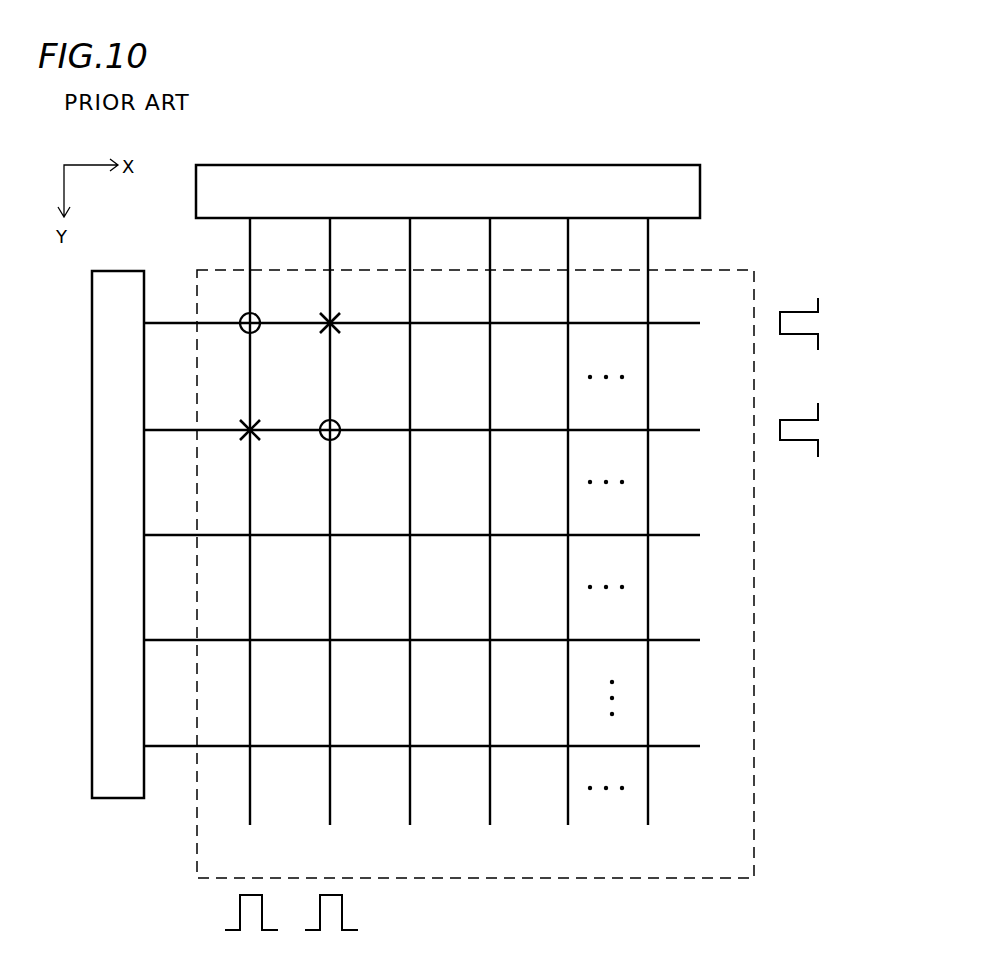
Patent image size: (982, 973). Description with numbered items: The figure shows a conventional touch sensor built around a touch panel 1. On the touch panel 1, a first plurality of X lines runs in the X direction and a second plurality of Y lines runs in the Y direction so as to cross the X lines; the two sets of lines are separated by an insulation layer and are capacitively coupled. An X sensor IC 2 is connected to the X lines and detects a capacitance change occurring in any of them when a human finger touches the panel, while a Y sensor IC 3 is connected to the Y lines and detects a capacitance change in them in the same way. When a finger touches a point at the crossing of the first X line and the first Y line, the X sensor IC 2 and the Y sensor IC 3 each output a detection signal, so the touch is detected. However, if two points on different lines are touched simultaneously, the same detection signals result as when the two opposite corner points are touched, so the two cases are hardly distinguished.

The touch panel 1 is at (752, 487).
The X sensor IC 2 is at (118, 788).
The Y sensor IC 3 is at (700, 190).